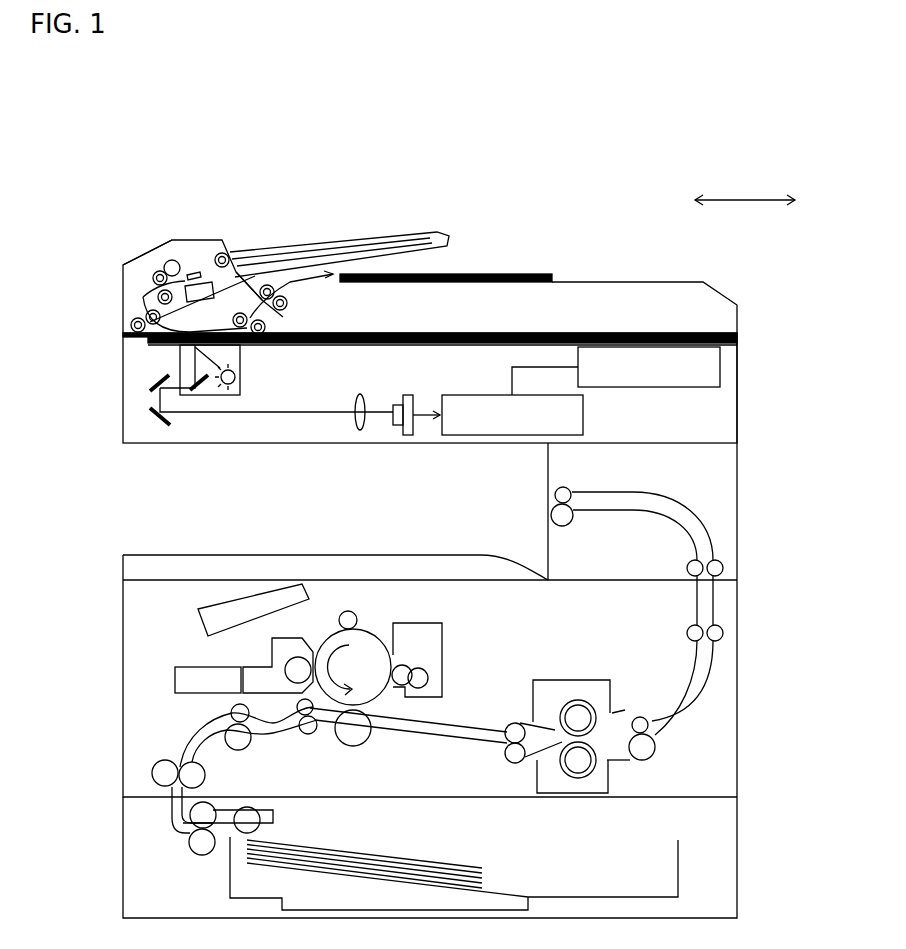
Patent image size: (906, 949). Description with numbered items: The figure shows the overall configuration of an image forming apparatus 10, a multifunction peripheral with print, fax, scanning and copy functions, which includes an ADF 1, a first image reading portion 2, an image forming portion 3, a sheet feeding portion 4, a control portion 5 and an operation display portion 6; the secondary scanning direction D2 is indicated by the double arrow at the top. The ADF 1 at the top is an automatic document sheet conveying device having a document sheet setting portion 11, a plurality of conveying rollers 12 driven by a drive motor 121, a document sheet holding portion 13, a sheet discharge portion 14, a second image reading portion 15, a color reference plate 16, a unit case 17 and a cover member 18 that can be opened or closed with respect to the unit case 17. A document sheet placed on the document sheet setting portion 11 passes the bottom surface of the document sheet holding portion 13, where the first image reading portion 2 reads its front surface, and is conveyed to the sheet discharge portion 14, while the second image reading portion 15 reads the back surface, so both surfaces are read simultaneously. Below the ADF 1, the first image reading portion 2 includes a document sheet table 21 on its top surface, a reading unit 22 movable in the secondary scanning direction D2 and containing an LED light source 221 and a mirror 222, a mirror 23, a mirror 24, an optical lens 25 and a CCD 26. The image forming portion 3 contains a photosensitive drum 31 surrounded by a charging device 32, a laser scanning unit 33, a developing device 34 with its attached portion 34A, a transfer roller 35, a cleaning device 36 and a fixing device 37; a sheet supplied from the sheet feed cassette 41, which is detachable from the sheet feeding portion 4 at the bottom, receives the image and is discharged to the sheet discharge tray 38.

The image forming apparatus 10 is at (84, 217).
The ADF 1 is at (122, 272).
The cover member 18 is at (144, 254).
The document sheet setting portion 11 is at (262, 250).
The drive motor 121 is at (172, 259).
The conveying rollers 12 is at (156, 273).
The color reference plate 16 is at (197, 271).
The document sheet holding portion 13 is at (189, 299).
The second image reading portion 15 is at (214, 283).
The sheet discharge portion 14 is at (558, 280).
The unit case 17 is at (660, 282).
The secondary scanning direction D2 is at (732, 203).
The first image reading portion 2 is at (122, 398).
The document sheet table 21 is at (384, 345).
The mirror 23 is at (152, 388).
The mirror 24 is at (158, 421).
The reading unit 22 is at (243, 383).
The LED light source 221 is at (240, 366).
The mirror 222 is at (207, 388).
The optical lens 25 is at (360, 431).
The CCD 26 is at (408, 436).
The control portion 5 is at (468, 436).
The operation display portion 6 is at (721, 368).
The image forming portion 3 is at (122, 600).
The sheet discharge tray 38 is at (470, 553).
The laser scanning unit 33 is at (200, 623).
The developing device 34 is at (272, 648).
The toner container 34A is at (190, 694).
The charging device 32 is at (338, 622).
The photosensitive drum 31 is at (377, 634).
The cleaning device 36 is at (418, 623).
The fixing device 37 is at (550, 680).
The transfer roller 35 is at (359, 746).
The sheet feeding portion 4 is at (122, 857).
The sheet feed cassette 41 is at (680, 872).